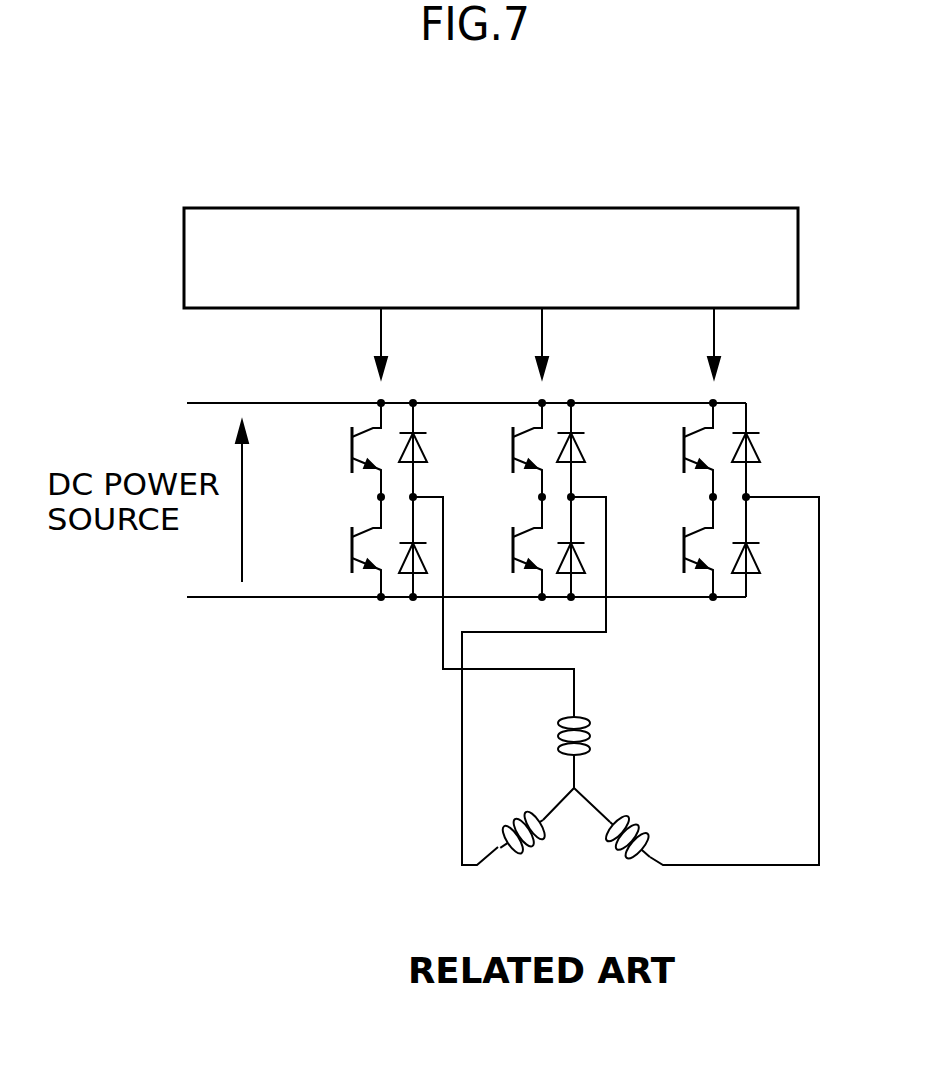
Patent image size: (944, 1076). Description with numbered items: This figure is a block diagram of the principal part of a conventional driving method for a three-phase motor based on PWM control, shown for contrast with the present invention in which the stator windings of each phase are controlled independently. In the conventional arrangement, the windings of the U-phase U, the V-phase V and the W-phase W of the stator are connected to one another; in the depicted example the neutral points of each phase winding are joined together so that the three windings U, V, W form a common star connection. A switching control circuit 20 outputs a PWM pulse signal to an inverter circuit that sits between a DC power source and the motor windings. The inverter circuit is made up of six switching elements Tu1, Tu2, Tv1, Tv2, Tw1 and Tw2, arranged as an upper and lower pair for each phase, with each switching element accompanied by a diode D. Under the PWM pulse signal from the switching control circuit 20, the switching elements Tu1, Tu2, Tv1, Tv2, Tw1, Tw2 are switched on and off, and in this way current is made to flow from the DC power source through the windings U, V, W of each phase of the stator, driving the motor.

The switching control circuit 20 is at (595, 208).
The switching element Tu1 is at (331, 450).
The switching element Tu2 is at (335, 547).
The switching element Tv1 is at (496, 450).
The switching element Tv2 is at (496, 547).
The switching element Tw1 is at (664, 450).
The switching element Tw2 is at (664, 547).
The freewheeling diode D is at (592, 500).
The U-phase winding U is at (591, 736).
The V-phase winding V is at (529, 840).
The W-phase winding W is at (635, 831).